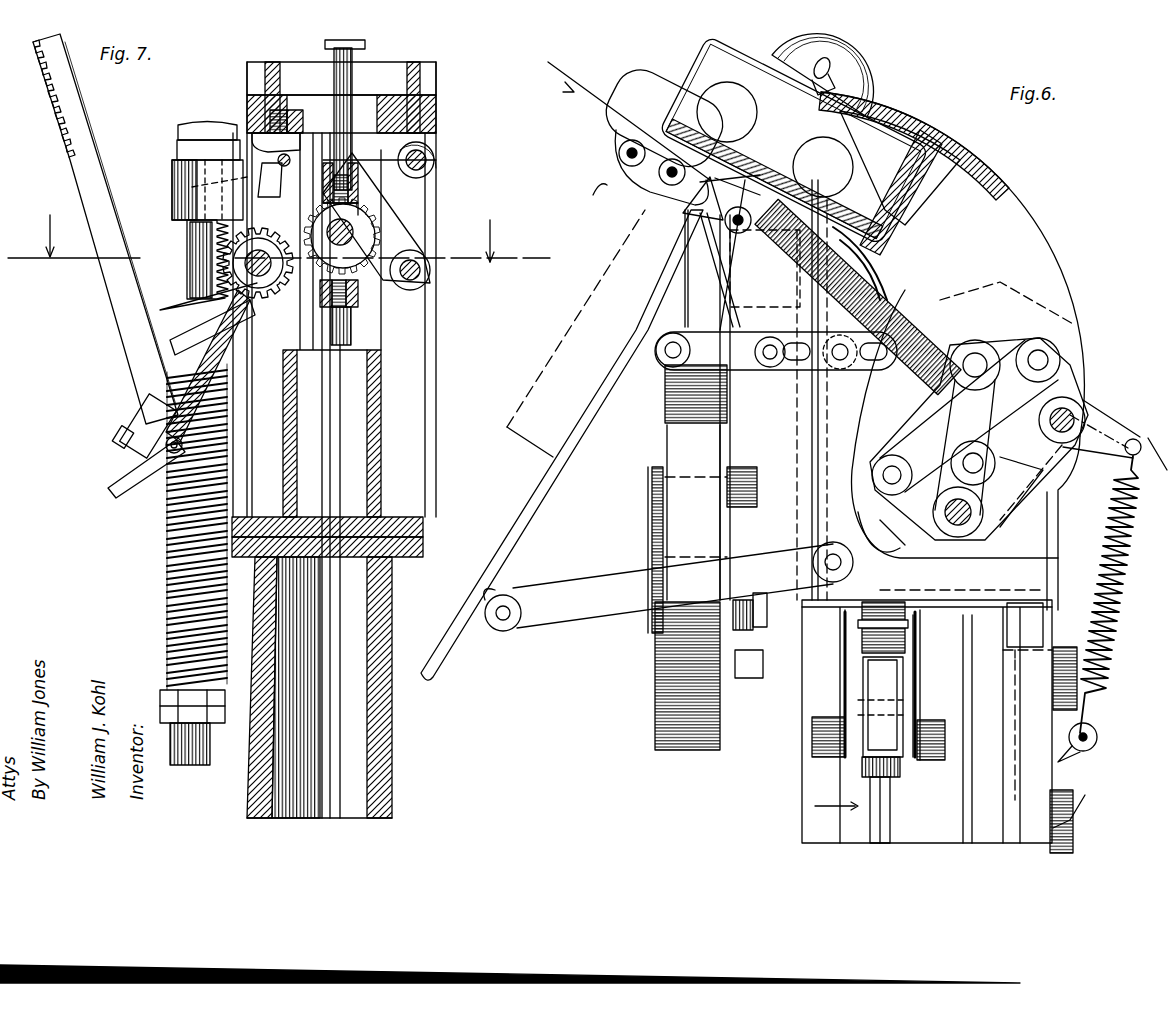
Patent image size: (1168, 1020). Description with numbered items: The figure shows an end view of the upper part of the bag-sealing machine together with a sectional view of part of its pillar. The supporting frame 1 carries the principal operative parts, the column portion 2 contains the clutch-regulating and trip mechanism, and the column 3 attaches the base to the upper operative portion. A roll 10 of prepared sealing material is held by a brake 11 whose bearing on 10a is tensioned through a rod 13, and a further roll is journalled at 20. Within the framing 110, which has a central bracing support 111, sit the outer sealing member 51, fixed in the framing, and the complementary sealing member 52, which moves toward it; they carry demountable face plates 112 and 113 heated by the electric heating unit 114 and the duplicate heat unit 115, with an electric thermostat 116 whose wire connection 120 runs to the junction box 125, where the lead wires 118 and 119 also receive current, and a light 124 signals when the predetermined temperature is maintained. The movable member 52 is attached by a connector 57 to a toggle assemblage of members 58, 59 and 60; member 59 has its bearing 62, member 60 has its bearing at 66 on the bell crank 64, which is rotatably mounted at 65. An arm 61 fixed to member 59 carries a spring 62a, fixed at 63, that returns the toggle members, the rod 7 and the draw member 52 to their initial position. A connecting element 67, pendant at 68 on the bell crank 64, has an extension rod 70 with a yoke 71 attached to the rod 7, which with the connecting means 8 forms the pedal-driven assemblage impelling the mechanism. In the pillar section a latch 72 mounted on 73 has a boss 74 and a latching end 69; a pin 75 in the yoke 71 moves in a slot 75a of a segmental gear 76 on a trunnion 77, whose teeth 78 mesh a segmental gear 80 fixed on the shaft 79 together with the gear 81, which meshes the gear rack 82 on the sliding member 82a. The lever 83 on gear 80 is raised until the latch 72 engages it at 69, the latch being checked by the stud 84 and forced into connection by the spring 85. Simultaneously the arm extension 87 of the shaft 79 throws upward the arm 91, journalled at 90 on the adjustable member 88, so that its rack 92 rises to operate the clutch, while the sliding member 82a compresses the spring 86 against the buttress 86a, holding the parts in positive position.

In FIG. 6, the supporting frame 1 is at (1050, 520).
In FIG. 7, the column portion 2 is at (412, 367).
In FIG. 6, the column portion 2 is at (970, 782).
In FIG. 7, the column 3 is at (392, 635).
In FIG. 7, the rod 7 is at (335, 500).
In FIG. 6, the rod 7 is at (878, 414).
In FIG. 6, the connecting means 8 is at (865, 270).
In FIG. 6, the roll of prepared sealing material 10 is at (655, 686).
In FIG. 6, the brake bearing 10a is at (745, 485).
In FIG. 6, the brake 11 is at (745, 672).
In FIG. 6, the tensioning rod 13 is at (767, 613).
In FIG. 7, the journal 20 is at (279, 245).
In FIG. 6, the sealing member 51 is at (618, 151).
In FIG. 6, the complementary sealing member 52 is at (775, 270).
In FIG. 6, the connector 57 is at (940, 320).
In FIG. 6, the toggle member 58 is at (1020, 345).
In FIG. 6, the toggle member 59 is at (1080, 395).
In FIG. 6, the toggle member 60 is at (995, 405).
In FIG. 6, the arm 61 is at (1112, 425).
In FIG. 6, the bearing 62 is at (1045, 470).
In FIG. 6, the spring 62a is at (1118, 562).
In FIG. 6, the spring anchor 63 is at (1096, 742).
In FIG. 6, the bell crank 64 is at (980, 500).
In FIG. 6, the bell crank mounting 65 is at (972, 511).
In FIG. 6, the bearing 66 is at (962, 455).
In FIG. 6, the connecting element 67 is at (925, 510).
In FIG. 6, the pivot 68 is at (895, 460).
In FIG. 7, the latching end 69 is at (185, 170).
In FIG. 7, the extension rod 70 is at (353, 84).
In FIG. 6, the extension rod 70 is at (838, 543).
In FIG. 7, the yoke 71 is at (360, 292).
In FIG. 6, the yoke 71 is at (862, 768).
In FIG. 7, the latch 72 is at (262, 140).
In FIG. 6, the latch 72 is at (905, 622).
In FIG. 7, the latch pivot 73 is at (434, 160).
In FIG. 7, the boss 74 is at (358, 170).
In FIG. 7, the pin 75 is at (362, 222).
In FIG. 6, the pin 75 is at (903, 703).
In FIG. 7, the slot 75a is at (354, 230).
In FIG. 7, the segmental gear 76 is at (400, 246).
In FIG. 7, the trunnion 77 is at (430, 268).
In FIG. 6, the trunnion 77 is at (812, 738).
In FIG. 7, the teeth 78 is at (380, 188).
In FIG. 6, the teeth 78 is at (880, 686).
In FIG. 7, the shaft 79 is at (262, 290).
In FIG. 7, the segmental gear 80 is at (331, 310).
In FIG. 7, the gear 81 is at (228, 265).
In FIG. 7, the gear rack 82 is at (190, 222).
In FIG. 7, the sliding member 82a is at (200, 240).
In FIG. 6, the sliding member 82a is at (1075, 776).
In FIG. 7, the lever 83 is at (192, 187).
In FIG. 7, the stud 84 is at (268, 192).
In FIG. 7, the spring 85 is at (288, 100).
In FIG. 7, the spring 86 is at (170, 517).
In FIG. 7, the buttress 86a is at (235, 345).
In FIG. 6, the buttress 86a is at (1070, 832).
In FIG. 7, the arm extension 87 is at (128, 462).
In FIG. 7, the adjustable member 88 is at (124, 431).
In FIG. 7, the journal 90 is at (168, 455).
In FIG. 7, the arm 91 is at (95, 158).
In FIG. 7, the rack 92 is at (48, 100).
In FIG. 6, the framing 110 is at (1000, 180).
In FIG. 6, the central bracing support 111 is at (900, 190).
In FIG. 6, the face plate 112 is at (683, 205).
In FIG. 6, the face plate 113 is at (712, 205).
In FIG. 6, the electric heating unit 114 is at (660, 176).
In FIG. 6, the heat unit 115 is at (725, 224).
In FIG. 6, the electric thermostat 116 is at (618, 160).
In FIG. 6, the lead wire 118 is at (593, 193).
In FIG. 6, the lead wire 119 is at (762, 185).
In FIG. 6, the wire connection 120 is at (632, 150).
In FIG. 6, the light 124 is at (868, 82).
In FIG. 6, the junction box 125 is at (758, 129).